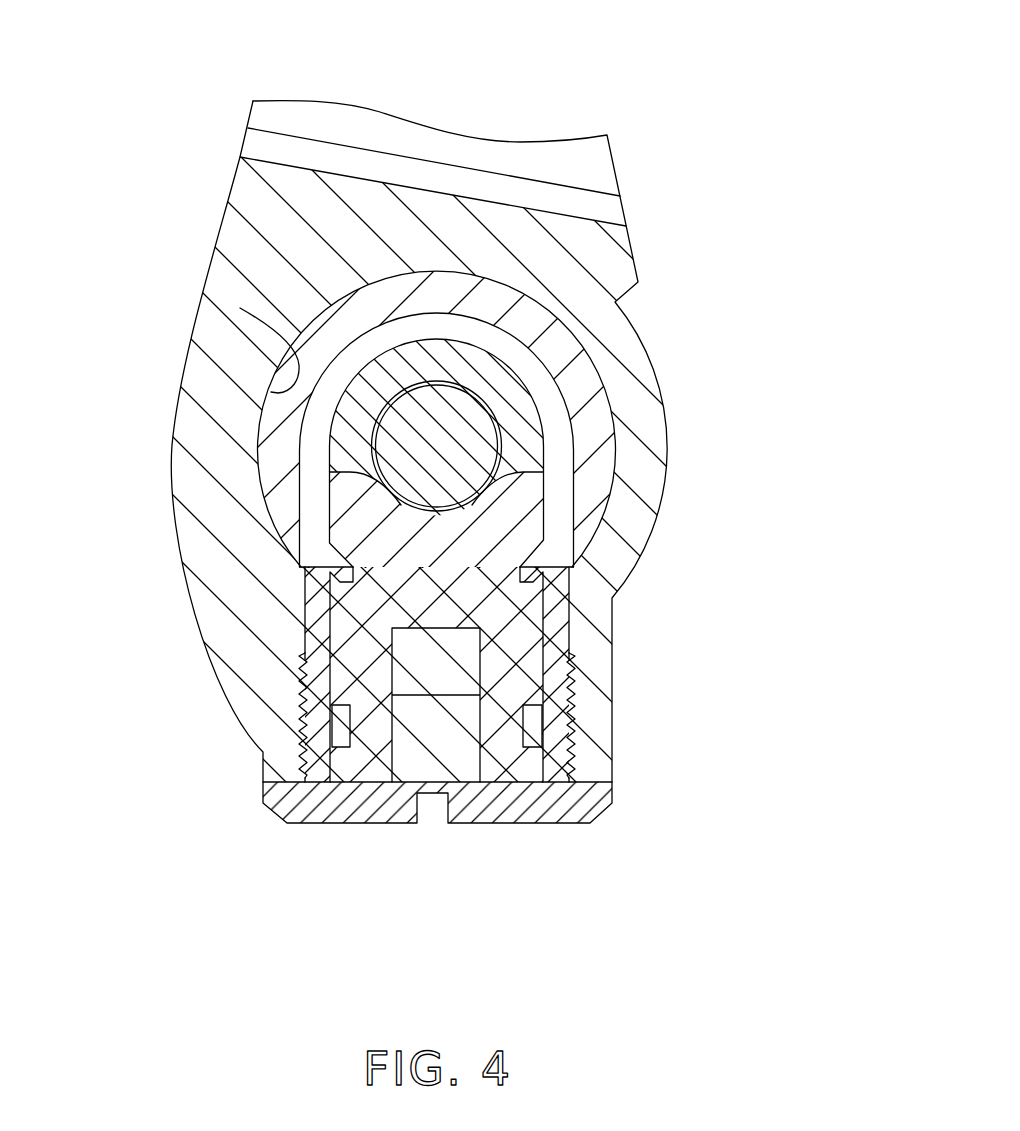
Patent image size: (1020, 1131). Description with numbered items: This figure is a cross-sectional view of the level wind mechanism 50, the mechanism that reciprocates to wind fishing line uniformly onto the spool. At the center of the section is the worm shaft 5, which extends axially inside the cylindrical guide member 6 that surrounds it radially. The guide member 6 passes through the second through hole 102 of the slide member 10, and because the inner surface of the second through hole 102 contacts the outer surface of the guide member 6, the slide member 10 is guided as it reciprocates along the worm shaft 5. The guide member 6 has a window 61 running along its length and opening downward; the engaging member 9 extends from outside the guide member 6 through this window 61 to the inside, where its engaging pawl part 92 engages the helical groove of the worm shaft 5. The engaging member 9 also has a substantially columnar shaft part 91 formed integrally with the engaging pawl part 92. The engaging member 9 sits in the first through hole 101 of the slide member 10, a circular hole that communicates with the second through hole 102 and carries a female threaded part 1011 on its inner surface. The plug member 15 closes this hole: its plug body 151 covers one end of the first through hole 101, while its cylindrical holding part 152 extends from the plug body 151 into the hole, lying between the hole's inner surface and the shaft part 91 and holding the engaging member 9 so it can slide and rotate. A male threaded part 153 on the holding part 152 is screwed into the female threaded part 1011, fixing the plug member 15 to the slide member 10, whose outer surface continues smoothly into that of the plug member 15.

The level wind mechanism 50 is at (673, 104).
The slide member 10 is at (646, 242).
The second through hole 102 is at (240, 308).
The first through hole 101 is at (319, 657).
The female threaded part 1011 is at (305, 724).
The guide member 6 is at (617, 394).
The window 61 is at (304, 530).
The worm shaft 5 is at (497, 382).
The engaging member 9 is at (567, 627).
The engaging pawl part 92 is at (515, 510).
The shaft part 91 is at (528, 630).
The plug member 15 is at (539, 717).
The plug body 151 is at (540, 815).
The holding part 152 is at (557, 727).
The male threaded part 153 is at (570, 693).